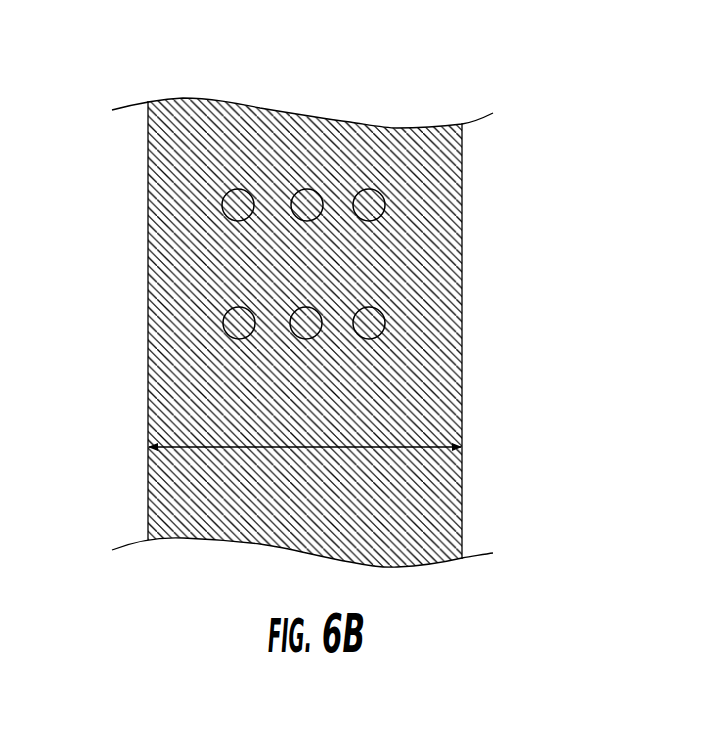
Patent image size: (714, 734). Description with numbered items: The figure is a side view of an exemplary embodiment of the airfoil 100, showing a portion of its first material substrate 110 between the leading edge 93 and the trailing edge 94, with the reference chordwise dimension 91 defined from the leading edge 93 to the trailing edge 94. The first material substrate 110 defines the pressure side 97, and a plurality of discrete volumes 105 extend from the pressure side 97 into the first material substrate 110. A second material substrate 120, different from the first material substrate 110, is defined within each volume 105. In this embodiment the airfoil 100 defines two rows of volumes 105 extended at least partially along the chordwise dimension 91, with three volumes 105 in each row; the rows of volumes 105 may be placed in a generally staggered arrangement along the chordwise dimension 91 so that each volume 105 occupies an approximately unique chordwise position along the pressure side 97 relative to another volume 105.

The airfoil 100 is at (402, 101).
The first material substrate 110 is at (437, 167).
The pressure side 97 is at (265, 148).
The plurality of discrete volumes 105 is at (368, 210).
The second material substrate 120 is at (370, 323).
The leading edge 93 is at (144, 390).
The trailing edge 94 is at (466, 384).
The chordwise dimension 91 is at (432, 446).